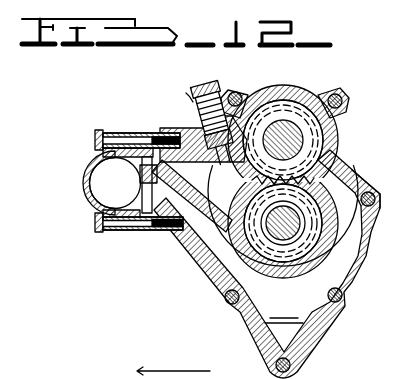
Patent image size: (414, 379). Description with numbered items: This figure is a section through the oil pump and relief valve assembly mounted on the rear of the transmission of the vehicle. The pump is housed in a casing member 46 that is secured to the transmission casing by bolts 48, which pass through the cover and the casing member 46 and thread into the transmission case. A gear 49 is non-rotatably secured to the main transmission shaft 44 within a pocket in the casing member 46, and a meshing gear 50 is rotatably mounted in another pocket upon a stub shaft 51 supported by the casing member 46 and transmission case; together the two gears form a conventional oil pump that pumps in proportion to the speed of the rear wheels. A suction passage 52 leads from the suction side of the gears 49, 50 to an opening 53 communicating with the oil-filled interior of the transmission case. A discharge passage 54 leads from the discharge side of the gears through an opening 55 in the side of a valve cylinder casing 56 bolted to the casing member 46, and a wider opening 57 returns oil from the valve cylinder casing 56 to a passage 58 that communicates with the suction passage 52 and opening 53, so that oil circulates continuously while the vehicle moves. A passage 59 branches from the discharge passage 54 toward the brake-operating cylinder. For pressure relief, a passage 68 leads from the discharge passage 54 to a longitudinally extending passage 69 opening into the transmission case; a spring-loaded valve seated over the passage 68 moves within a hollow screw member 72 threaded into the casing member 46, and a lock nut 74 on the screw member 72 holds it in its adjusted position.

The main transmission shaft 44 is at (305, 137).
The casing member 46 is at (372, 228).
The bolts 48 is at (338, 96).
The gear 49 is at (323, 147).
The gear 50 is at (293, 230).
The stub shaft 51 is at (337, 262).
The passage 52 is at (353, 186).
The opening 53 is at (297, 335).
The passage 54 is at (166, 132).
The opening 55 is at (138, 160).
The valve cylinder casing 56 is at (84, 176).
The opening 57 is at (141, 193).
The passage 58 is at (230, 260).
The passage 59 is at (187, 237).
The passage 68 is at (220, 163).
The passage 69 is at (199, 134).
The screw member 72 is at (196, 88).
The lock nut 74 is at (187, 96).